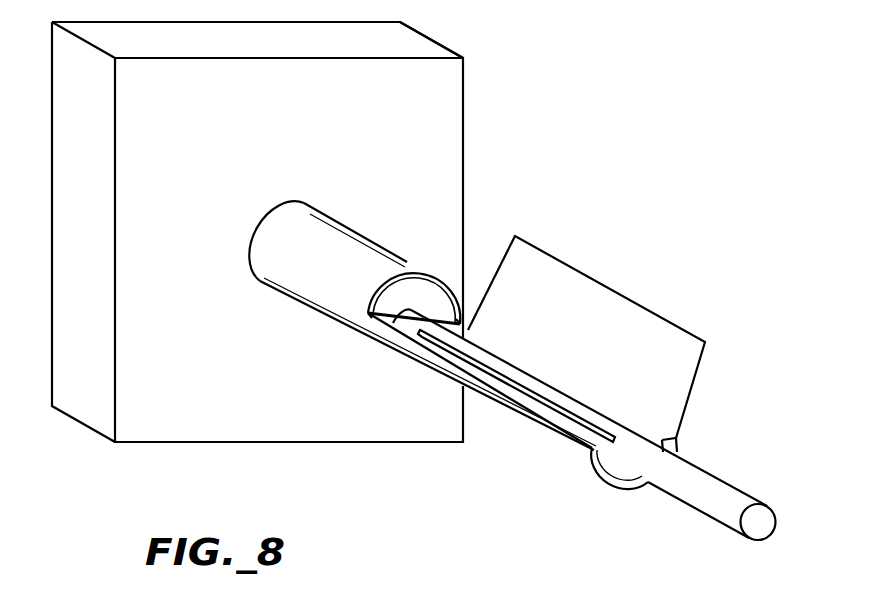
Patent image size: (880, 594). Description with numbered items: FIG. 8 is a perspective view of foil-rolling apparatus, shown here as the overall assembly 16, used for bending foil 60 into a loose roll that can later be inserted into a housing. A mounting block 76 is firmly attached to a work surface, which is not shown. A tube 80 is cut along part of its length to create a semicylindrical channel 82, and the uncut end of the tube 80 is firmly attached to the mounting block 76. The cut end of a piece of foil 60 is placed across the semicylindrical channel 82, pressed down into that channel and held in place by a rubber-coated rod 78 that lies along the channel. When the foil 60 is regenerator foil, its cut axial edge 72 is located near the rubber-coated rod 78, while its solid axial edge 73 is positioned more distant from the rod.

The mounting assembly 16 is at (437, 508).
The foil 60 is at (698, 362).
The cut axial edge 72 is at (535, 403).
The solid axial edge 73 is at (585, 275).
The mounting block 76 is at (465, 118).
The rubber-coated rod 78 is at (718, 477).
The tube 80 is at (407, 261).
The semicylindrical channel 82 is at (587, 465).